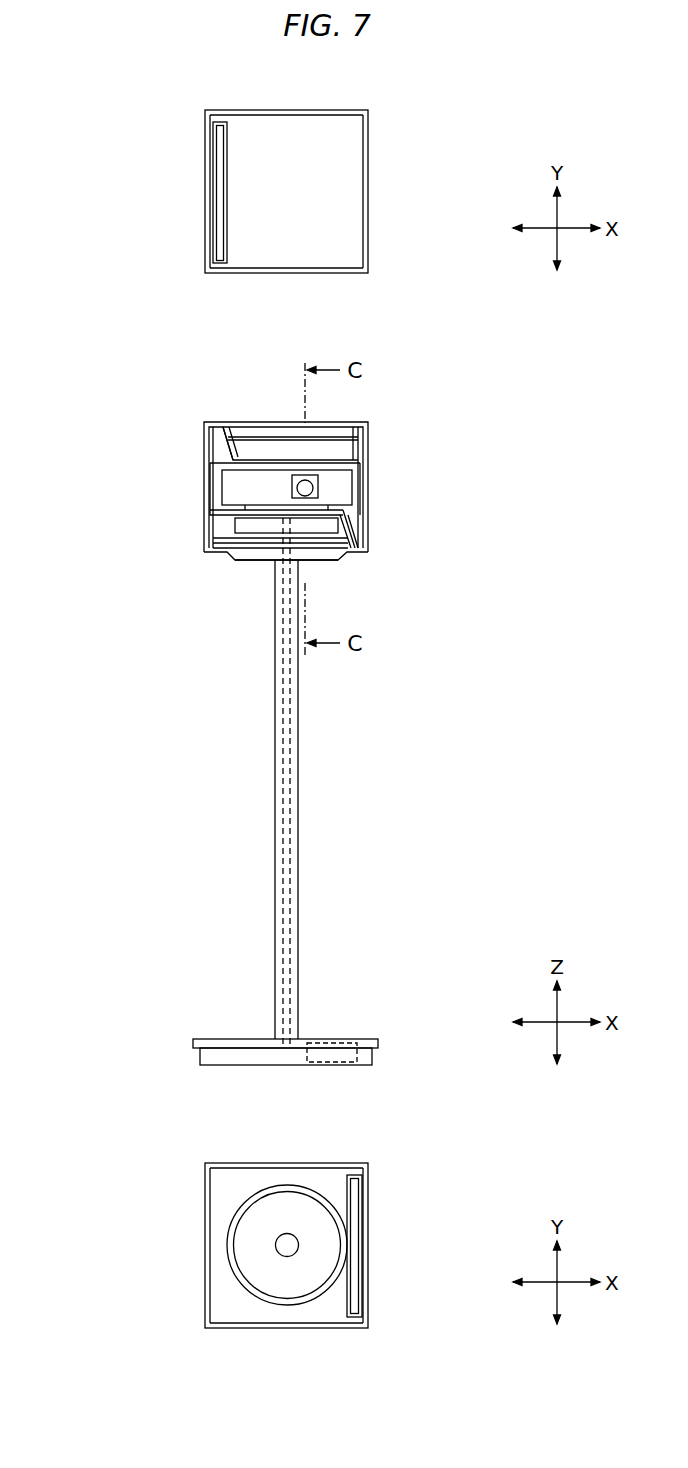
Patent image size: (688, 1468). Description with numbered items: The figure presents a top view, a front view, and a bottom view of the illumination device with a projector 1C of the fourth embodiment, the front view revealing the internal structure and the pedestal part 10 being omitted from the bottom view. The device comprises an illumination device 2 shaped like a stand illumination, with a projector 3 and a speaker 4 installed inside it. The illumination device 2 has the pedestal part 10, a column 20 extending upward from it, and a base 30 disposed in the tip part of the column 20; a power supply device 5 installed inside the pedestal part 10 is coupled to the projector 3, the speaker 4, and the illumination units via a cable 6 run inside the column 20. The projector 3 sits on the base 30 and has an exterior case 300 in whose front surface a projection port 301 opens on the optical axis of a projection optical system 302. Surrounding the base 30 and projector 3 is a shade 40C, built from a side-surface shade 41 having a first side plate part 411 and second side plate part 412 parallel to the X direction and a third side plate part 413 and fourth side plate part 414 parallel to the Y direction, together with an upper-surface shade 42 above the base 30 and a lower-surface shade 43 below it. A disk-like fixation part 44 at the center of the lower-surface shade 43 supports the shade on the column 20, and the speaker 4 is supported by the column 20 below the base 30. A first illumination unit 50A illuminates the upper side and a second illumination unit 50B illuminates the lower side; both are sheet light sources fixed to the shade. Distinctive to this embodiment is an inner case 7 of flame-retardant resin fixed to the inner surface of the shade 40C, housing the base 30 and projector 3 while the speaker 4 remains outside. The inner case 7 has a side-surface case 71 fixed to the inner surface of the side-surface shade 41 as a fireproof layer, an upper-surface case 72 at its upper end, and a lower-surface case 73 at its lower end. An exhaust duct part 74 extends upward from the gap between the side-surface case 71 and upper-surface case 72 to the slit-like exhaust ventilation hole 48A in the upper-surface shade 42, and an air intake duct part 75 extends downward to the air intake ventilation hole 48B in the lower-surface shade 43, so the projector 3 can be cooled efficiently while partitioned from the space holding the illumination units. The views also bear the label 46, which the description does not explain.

The illumination device with a projector 1C is at (203, 710).
The illumination device 2 is at (274, 706).
The projector 3 is at (225, 498).
The speaker 4 is at (228, 555).
The power supply device 5 is at (343, 1037).
The cable 6 is at (295, 890).
The inner case 7 is at (290, 408).
The pedestal part 10 is at (220, 1039).
The column 20 is at (298, 748).
The base 30 is at (357, 504).
The exterior case 300 is at (223, 475).
The projection port 301 is at (320, 483).
The projection optical system 302 is at (327, 505).
The shade 40C is at (231, 725).
The side-surface shade 41 is at (368, 175).
The first side plate part 411 is at (327, 273).
The second side plate part 412 is at (327, 110).
The third side plate part 413 is at (203, 210).
The fourth side plate part 414 is at (368, 213).
The upper-surface shade 42 is at (282, 133).
The lower-surface shade 43 is at (242, 560).
The fixation part 44 is at (262, 560).
The corner portion 46 is at (233, 110).
The exhaust ventilation hole 48A is at (185, 291).
The air intake ventilation hole 48B is at (353, 553).
The first illumination unit 50A is at (357, 433).
The second illumination unit 50B is at (223, 550).
The side-surface case 71 is at (362, 475).
The upper-surface case 72 is at (310, 460).
The lower-surface case 73 is at (245, 523).
The exhaust duct part 74 is at (253, 438).
The air intake duct part 75 is at (337, 560).